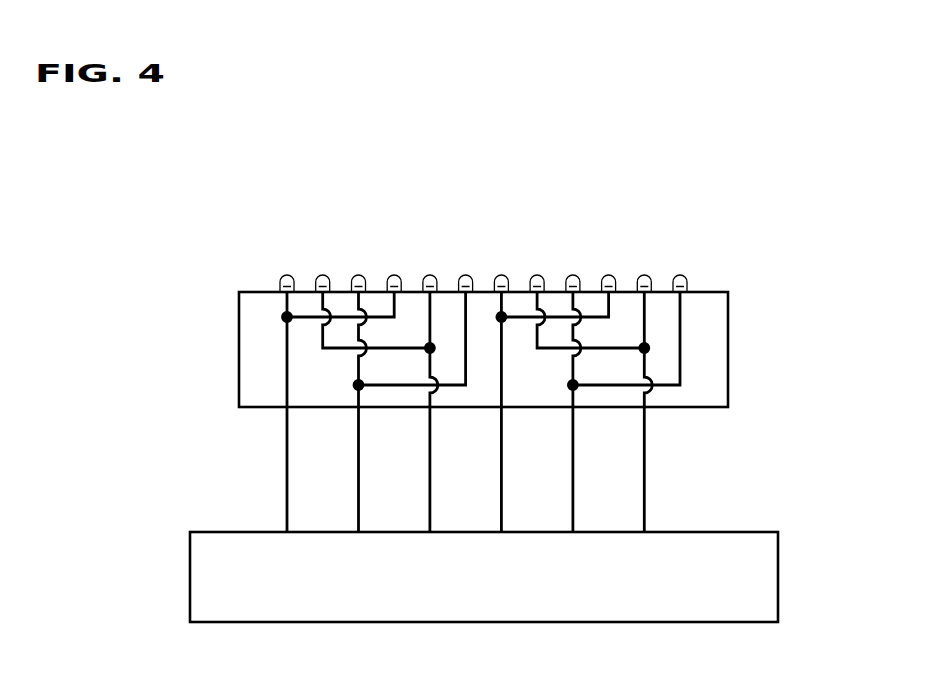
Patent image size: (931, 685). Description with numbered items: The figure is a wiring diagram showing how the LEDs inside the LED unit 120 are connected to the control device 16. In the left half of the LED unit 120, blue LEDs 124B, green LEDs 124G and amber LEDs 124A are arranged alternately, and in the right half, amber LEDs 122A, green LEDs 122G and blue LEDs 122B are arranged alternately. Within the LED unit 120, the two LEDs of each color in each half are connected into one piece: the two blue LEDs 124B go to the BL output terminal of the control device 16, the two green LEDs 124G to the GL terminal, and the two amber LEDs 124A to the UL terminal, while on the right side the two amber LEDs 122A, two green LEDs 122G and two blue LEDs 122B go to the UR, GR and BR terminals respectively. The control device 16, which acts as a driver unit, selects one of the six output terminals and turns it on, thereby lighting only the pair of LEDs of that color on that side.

The LED unit 120 is at (239, 347).
The control device 16 is at (190, 577).
The amber LED 124A is at (358, 276).
The green LED 124G is at (323, 276).
The blue LED 124B is at (287, 276).
The amber LED 122A is at (501, 276).
The green LED 122G is at (537, 276).
The blue LED 122B is at (573, 276).